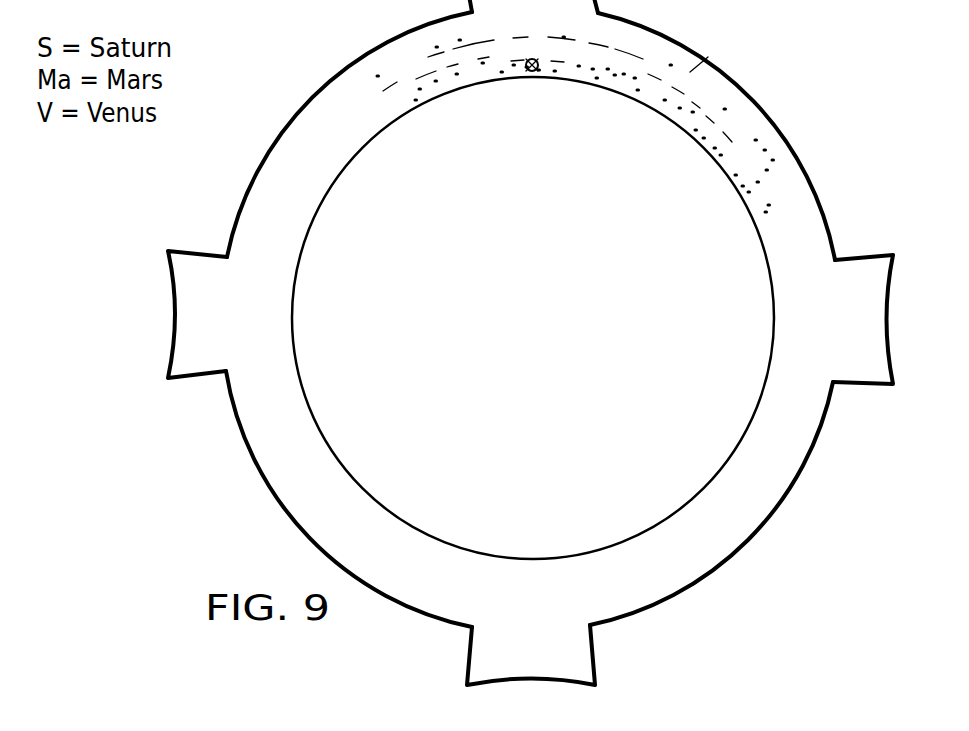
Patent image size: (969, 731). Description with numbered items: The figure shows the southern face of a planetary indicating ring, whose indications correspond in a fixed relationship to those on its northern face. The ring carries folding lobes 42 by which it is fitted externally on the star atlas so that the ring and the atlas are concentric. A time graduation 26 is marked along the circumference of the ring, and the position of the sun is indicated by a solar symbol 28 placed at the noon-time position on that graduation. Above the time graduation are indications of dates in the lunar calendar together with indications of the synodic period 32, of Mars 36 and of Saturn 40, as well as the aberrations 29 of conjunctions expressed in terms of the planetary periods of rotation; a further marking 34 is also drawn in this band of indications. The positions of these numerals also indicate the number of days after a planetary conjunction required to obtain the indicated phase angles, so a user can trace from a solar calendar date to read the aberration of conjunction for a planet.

The Saturn indication 40 is at (460, 10).
The folding lobes 42 is at (205, 265).
The synodic indication 32 is at (533, 279).
The solar symbol 28 is at (532, 72).
The left scale markings 34 is at (443, 62).
The time graduation 26 is at (643, 93).
The Mars indication 36 is at (717, 64).
The aberrations of conjunctions 29 is at (760, 200).